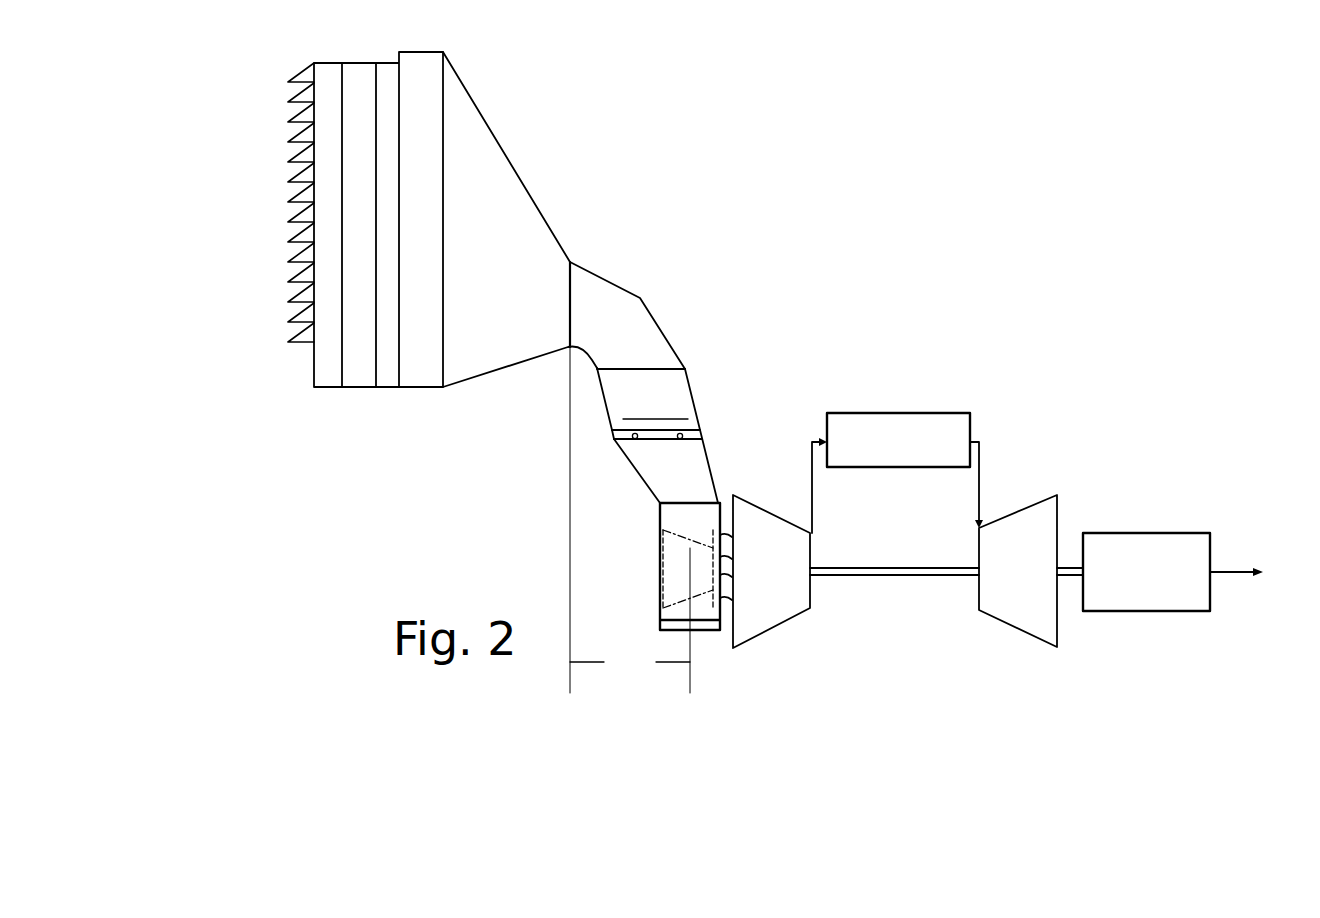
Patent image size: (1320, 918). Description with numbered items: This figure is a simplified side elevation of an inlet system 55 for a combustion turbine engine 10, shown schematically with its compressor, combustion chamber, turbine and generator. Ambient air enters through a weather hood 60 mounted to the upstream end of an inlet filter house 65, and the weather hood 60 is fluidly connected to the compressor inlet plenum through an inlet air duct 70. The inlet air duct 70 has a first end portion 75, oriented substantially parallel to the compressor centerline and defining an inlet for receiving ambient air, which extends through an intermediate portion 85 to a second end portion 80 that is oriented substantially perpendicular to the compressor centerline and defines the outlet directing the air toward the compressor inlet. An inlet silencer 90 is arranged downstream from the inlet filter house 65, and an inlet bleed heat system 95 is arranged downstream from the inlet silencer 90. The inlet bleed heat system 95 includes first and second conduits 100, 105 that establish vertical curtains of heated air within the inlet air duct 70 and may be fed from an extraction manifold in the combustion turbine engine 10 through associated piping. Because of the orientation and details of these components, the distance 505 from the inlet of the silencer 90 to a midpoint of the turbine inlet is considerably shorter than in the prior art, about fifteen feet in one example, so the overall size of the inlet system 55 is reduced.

The combustion turbine engine 10 is at (1098, 411).
The inlet system 55 is at (611, 475).
The weather hood 60 is at (292, 343).
The inlet filter house 65 is at (363, 378).
The inlet air duct 70 is at (592, 417).
The first end portion 75 is at (508, 163).
The second end portion 80 is at (700, 487).
The intermediate portion 85 is at (705, 408).
The inlet silencer 90 is at (628, 383).
The inlet bleed heat system 95 is at (656, 419).
The first conduit 100 is at (690, 441).
The second conduit 105 is at (630, 448).
The distance 505 is at (630, 663).